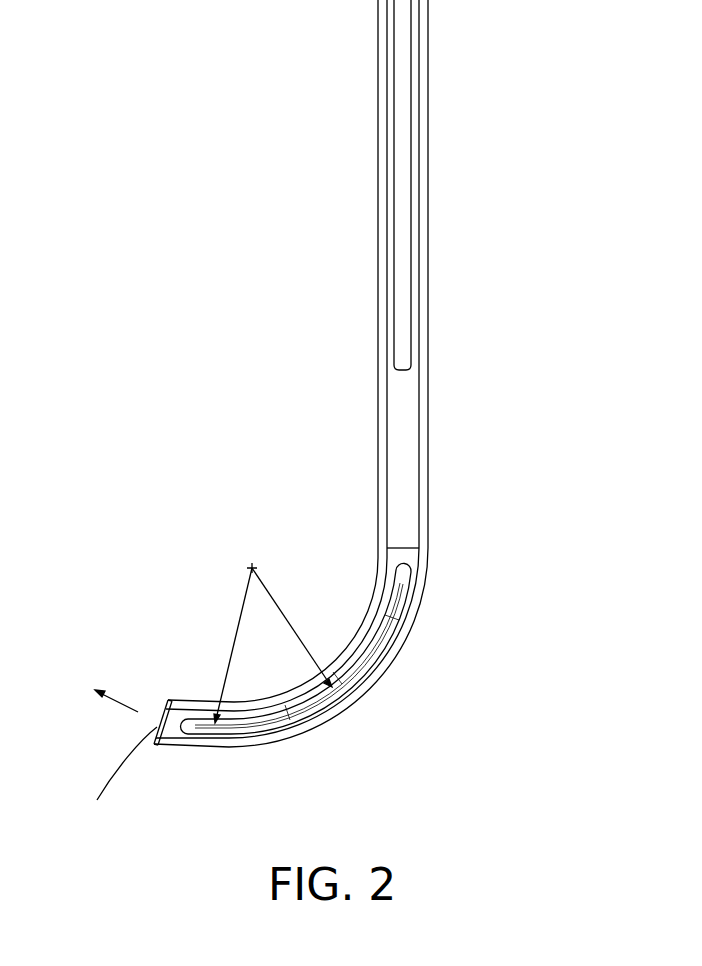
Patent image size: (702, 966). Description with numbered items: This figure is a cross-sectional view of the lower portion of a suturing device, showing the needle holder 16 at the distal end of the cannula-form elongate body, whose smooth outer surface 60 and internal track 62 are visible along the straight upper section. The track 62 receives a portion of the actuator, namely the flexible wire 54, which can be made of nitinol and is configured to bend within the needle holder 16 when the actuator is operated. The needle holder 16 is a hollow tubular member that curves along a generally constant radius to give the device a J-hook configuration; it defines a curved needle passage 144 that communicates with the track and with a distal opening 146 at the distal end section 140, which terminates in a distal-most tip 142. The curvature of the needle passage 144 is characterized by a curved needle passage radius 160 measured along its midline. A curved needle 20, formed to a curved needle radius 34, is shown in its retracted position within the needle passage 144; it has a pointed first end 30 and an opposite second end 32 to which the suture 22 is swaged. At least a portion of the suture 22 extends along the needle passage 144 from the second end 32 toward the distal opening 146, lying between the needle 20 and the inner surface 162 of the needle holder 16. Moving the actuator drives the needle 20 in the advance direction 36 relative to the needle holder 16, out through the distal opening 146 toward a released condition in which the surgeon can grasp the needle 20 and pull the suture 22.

The needle holder 16 is at (462, 447).
The needle 20 is at (297, 713).
The suture 22 is at (127, 776).
The first end 30 is at (195, 716).
The second end 32 is at (395, 570).
The curved needle radius 34 is at (293, 610).
The advance direction 36 is at (138, 712).
The wire 54 is at (405, 340).
The outer surface 60 is at (428, 230).
The track 62 is at (407, 388).
The distal end section 140 is at (215, 750).
The distal-most tip 142 is at (170, 698).
The needle passage 144 is at (342, 667).
The distal opening 146 is at (160, 717).
The curved needle passage radius 160 is at (242, 610).
The inner surface 162 is at (235, 737).